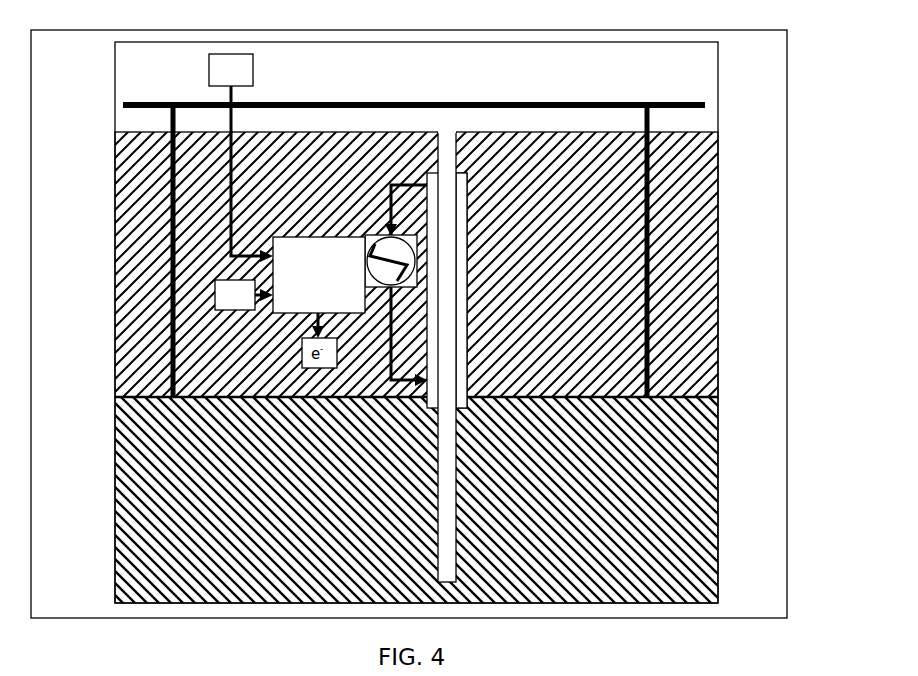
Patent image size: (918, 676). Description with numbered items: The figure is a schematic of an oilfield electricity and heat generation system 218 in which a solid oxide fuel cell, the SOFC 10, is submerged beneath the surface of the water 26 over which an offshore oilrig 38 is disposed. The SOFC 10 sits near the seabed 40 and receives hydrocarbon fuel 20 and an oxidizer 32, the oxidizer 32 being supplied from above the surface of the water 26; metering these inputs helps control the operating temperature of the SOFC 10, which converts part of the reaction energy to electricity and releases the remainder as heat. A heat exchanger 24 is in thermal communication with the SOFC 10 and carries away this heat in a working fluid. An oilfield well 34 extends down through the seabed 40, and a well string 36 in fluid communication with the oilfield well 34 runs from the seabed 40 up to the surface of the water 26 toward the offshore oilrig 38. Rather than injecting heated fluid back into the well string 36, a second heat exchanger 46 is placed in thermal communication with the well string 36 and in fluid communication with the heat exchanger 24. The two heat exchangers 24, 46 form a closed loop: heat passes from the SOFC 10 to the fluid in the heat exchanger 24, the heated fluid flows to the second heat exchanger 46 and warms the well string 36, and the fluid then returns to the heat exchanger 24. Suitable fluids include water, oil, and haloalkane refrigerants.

The SOFC 10 is at (319, 275).
The hydrocarbon fuel 20 is at (244, 295).
The heat exchanger 24 is at (377, 234).
The water 26 is at (693, 233).
The oxidizer 32 is at (241, 158).
The oilfield well 34 is at (445, 507).
The well string 36 is at (445, 163).
The offshore oilrig 38 is at (622, 102).
The seabed 40 is at (667, 438).
The second heat exchanger 46 is at (468, 217).
The oilfield electricity and heat generation system 218 is at (196, 259).